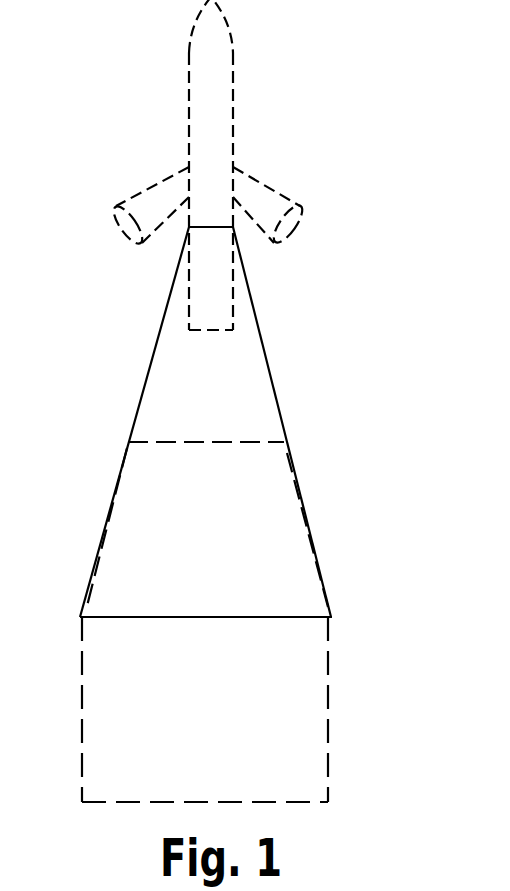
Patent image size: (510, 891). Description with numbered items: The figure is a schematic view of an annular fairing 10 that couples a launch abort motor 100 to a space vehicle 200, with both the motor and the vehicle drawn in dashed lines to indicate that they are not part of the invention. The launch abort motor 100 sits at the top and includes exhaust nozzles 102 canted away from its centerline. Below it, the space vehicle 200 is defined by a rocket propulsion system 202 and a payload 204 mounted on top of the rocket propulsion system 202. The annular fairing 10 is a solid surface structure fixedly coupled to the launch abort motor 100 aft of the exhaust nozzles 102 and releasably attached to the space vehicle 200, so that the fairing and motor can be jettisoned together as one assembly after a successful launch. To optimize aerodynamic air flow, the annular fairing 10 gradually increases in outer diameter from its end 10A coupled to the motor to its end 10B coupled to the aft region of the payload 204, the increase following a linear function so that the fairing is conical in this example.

The launch abort motor 100 is at (269, 165).
The exhaust nozzles 102 is at (212, 187).
The annular fairing 10 is at (231, 422).
The end of annular fairing coupled to motor 10A is at (286, 257).
The end of annular fairing coupled to payload 10B is at (261, 636).
The payload 204 is at (260, 526).
The space vehicle 200 is at (267, 709).
The rocket propulsion system 202 is at (276, 724).